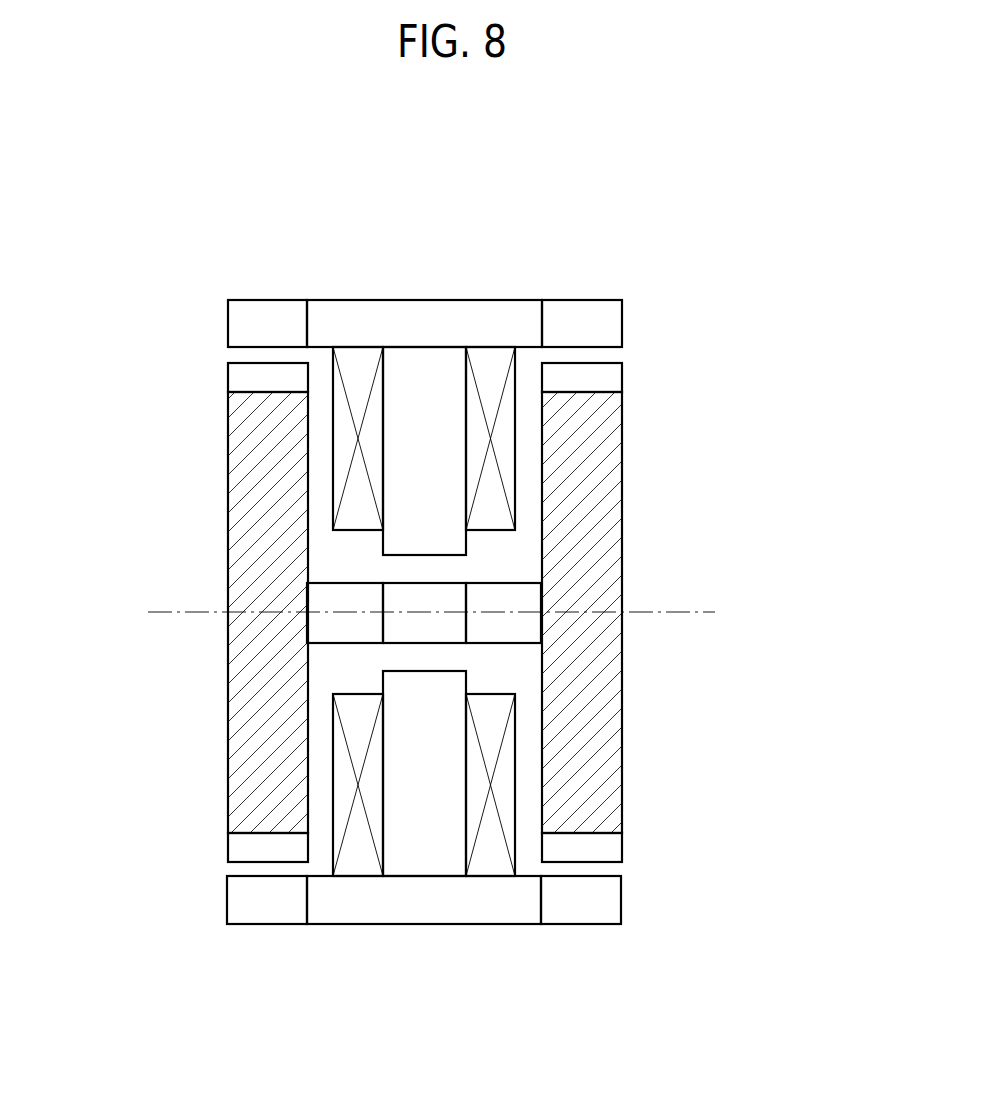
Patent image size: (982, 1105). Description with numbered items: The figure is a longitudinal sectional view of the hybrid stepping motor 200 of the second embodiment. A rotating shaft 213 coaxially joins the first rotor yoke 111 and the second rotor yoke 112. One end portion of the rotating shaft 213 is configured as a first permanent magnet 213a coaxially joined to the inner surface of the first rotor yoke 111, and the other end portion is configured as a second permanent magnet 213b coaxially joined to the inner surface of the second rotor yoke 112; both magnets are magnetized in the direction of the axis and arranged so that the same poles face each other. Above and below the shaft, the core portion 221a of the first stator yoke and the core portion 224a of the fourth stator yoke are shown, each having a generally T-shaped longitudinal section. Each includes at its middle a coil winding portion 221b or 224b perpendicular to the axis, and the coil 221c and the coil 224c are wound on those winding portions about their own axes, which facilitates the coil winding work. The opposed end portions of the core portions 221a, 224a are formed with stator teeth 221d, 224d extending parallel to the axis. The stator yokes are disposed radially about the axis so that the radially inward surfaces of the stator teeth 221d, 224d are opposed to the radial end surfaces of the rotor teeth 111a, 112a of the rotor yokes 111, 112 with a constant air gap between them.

The hybrid stepping motor 200 is at (155, 243).
The stator teeth 221d is at (262, 310).
The core portion 221a is at (510, 313).
The coil winding portion 221b is at (402, 453).
The coil 221c is at (457, 353).
The rotor teeth 111a is at (235, 377).
The first rotor yoke 111 is at (232, 667).
The rotor teeth 112a is at (613, 377).
The second rotor yoke 112 is at (622, 667).
The rotating shaft 213 is at (785, 490).
The first permanent magnet 213a is at (440, 527).
The second permanent magnet 213b is at (500, 584).
The coil winding portion 224b is at (393, 752).
The coil 224c is at (470, 855).
The core portion 224a is at (497, 915).
The stator teeth 224d is at (241, 915).